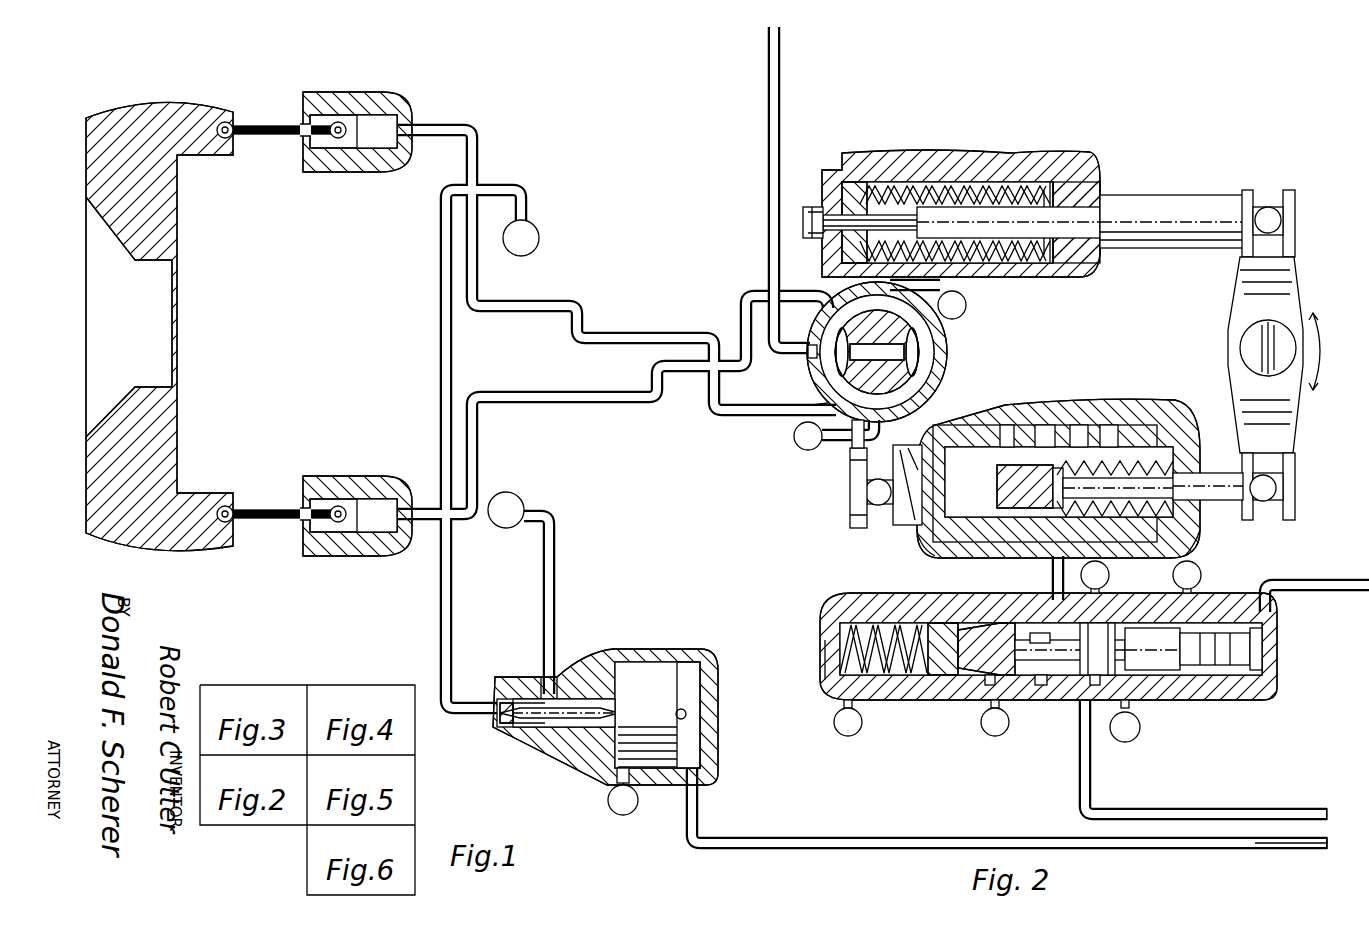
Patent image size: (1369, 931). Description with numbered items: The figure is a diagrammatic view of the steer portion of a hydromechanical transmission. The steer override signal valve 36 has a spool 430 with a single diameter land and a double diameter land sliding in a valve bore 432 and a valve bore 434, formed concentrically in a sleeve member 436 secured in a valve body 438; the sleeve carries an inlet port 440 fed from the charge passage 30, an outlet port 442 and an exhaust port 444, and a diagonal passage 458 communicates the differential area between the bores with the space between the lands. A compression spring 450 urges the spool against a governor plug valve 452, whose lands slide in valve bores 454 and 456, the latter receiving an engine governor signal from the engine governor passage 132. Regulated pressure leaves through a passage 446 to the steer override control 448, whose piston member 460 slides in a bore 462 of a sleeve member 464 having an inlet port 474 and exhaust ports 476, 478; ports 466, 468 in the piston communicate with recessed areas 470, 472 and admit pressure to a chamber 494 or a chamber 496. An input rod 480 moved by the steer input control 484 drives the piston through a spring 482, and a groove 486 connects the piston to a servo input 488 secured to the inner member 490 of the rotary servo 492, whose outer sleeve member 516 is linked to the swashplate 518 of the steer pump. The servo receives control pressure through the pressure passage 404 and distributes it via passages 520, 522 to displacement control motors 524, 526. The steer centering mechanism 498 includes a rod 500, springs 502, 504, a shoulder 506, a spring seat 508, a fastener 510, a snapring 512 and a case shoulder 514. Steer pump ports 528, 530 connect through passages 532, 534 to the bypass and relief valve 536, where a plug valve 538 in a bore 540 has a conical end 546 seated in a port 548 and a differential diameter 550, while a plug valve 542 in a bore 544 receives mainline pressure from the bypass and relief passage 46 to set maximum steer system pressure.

In FIG. 1, the swashplate 518 is at (162, 437).
In FIG. 1, the displacement control motor 526 is at (409, 182).
In FIG. 1, the displacement control motor 524 is at (404, 470).
In FIG. 1, the port of the steer pump 530 is at (540, 243).
In FIG. 1, the port of the steer pump 528 is at (508, 529).
In FIG. 1, the passage 520 is at (588, 402).
In FIG. 1, the passage 522 is at (614, 336).
In FIG. 1, the passage 532 is at (555, 568).
In FIG. 1, the passage 534 is at (452, 606).
In FIG. 1, the bypass and relief valve 536 is at (625, 703).
In FIG. 1, the plug valve 538 is at (573, 724).
In FIG. 1, the bore 540 is at (527, 723).
In FIG. 1, the plug valve 542 is at (660, 672).
In FIG. 1, the bore 544 is at (697, 765).
In FIG. 1, the conical end 546 is at (496, 726).
In FIG. 1, the port 548 is at (502, 710).
In FIG. 1, the differential diameter 550 is at (542, 690).
In FIG. 1, the bypass and relief passage 46 is at (767, 843).
In FIG. 2, the bypass and relief passage 46 is at (1258, 848).
In FIG. 2, the pressure passage 404 is at (769, 128).
In FIG. 2, the rotary servo 492 is at (888, 366).
In FIG. 2, the inner member 490 is at (833, 352).
In FIG. 2, the outer sleeve member 516 is at (820, 406).
In FIG. 2, the compression spring 504 is at (1011, 221).
In FIG. 2, the steer centering mechanism 498 is at (1108, 170).
In FIG. 2, the compression spring 502 is at (1056, 180).
In FIG. 2, the shoulder 514 is at (1050, 266).
In FIG. 2, the snapring 512 is at (843, 178).
In FIG. 2, the spring seat 508 is at (840, 232).
In FIG. 2, the fastener 510 is at (822, 207).
In FIG. 2, the shoulder 506 is at (1055, 217).
In FIG. 2, the rod 500 is at (1160, 212).
In FIG. 2, the steer input control 484 is at (1295, 355).
In FIG. 2, the input rod 480 is at (1250, 480).
In FIG. 2, the sleeve member 464 is at (1113, 462).
In FIG. 2, the bore 462 is at (981, 422).
In FIG. 2, the exhaust port 478 is at (934, 432).
In FIG. 2, the inlet port 474 is at (1045, 426).
In FIG. 2, the recessed area 472 is at (1079, 428).
In FIG. 2, the exhaust port 476 is at (1106, 428).
In FIG. 2, the steer override control 448 is at (1003, 400).
In FIG. 2, the recessed area 470 is at (998, 482).
In FIG. 2, the port 466 is at (1000, 496).
In FIG. 2, the port 468 is at (1076, 487).
In FIG. 2, the spring 482 is at (1188, 475).
In FIG. 2, the chamber 496 is at (1198, 545).
In FIG. 2, the chamber 494 is at (925, 545).
In FIG. 2, the piston member 460 is at (893, 522).
In FIG. 2, the groove 486 is at (850, 512).
In FIG. 2, the servo input 488 is at (851, 466).
In FIG. 2, the compression spring 450 is at (1047, 664).
In FIG. 2, the valve bore 434 is at (937, 624).
In FIG. 2, the valve body 438 is at (970, 620).
In FIG. 2, the valve bore 432 is at (1022, 622).
In FIG. 2, the spool 430 is at (1064, 692).
In FIG. 2, the diagonal passage 458 is at (1018, 648).
In FIG. 2, the sleeve member 436 is at (1104, 630).
In FIG. 2, the valve bore 454 is at (1142, 660).
In FIG. 2, the governor plug valve 452 is at (1240, 670).
In FIG. 2, the valve bore 456 is at (1216, 628).
In FIG. 2, the exhaust port 444 is at (985, 690).
In FIG. 2, the outlet port 442 is at (1040, 692).
In FIG. 2, the inlet port 440 is at (1096, 702).
In FIG. 2, the steer override signal valve 36 is at (916, 734).
In FIG. 2, the passage 446 is at (1052, 575).
In FIG. 2, the charge passage 30 is at (1234, 814).
In FIG. 2, the engine governor passage 132 is at (1300, 590).